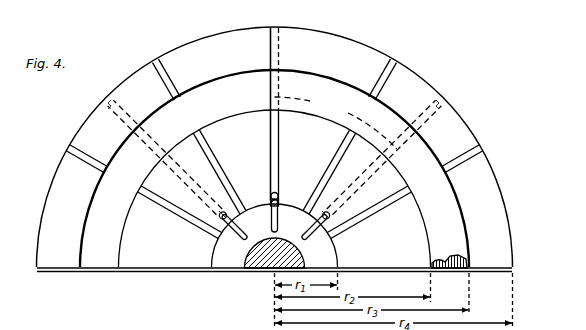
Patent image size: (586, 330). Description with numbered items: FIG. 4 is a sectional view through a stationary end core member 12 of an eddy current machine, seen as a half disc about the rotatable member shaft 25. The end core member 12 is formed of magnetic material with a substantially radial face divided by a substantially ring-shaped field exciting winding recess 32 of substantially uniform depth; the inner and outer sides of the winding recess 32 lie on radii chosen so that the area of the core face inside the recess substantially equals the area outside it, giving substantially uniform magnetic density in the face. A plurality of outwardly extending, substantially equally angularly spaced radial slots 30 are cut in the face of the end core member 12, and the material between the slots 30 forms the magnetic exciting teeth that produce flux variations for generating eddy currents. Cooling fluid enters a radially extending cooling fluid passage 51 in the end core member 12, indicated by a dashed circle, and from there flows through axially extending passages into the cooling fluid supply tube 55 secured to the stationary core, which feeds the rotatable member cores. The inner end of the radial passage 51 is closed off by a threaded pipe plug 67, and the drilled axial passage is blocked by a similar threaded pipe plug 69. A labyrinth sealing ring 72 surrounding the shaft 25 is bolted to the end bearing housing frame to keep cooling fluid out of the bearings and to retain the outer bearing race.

The end core member 12 is at (203, 40).
The radial slots 30 is at (282, 49).
The field exciting winding recess 32 is at (100, 190).
The radially extending cooling fluid passage 51 is at (347, 110).
The cooling fluid supply tube 55 is at (303, 233).
The threaded pipe plug 67 is at (268, 199).
The threaded pipe plug 69 is at (279, 195).
The labyrinth sealing ring 72 is at (228, 267).
The rotatable member shaft 25 is at (258, 263).